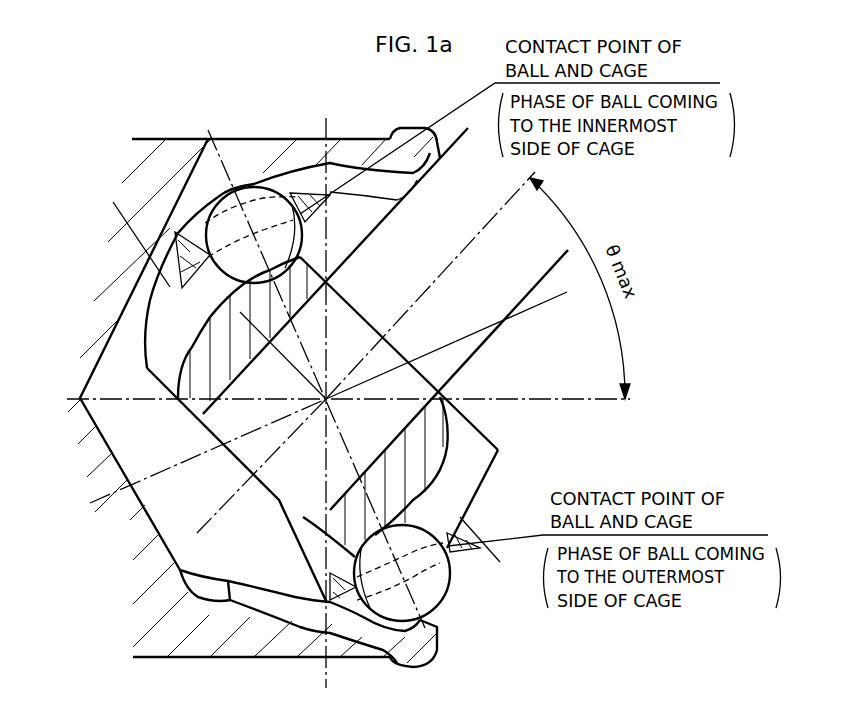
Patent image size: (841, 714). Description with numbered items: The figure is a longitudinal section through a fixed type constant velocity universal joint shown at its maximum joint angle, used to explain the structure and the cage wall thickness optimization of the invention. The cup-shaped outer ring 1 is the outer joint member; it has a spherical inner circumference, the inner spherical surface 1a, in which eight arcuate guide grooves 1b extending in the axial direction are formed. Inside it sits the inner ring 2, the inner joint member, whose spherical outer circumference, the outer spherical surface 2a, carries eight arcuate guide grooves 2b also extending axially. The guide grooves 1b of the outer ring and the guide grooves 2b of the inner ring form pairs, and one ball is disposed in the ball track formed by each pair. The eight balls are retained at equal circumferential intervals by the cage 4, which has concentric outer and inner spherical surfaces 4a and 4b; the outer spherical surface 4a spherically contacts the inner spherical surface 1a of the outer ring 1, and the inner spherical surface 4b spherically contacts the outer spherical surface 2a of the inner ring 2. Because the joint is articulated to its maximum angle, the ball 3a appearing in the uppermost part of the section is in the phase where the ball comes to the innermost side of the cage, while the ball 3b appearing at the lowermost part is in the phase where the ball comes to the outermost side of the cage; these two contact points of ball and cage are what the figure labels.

The outer ring 1 is at (180, 139).
The inner spherical surface 1a is at (249, 582).
The guide grooves 1b is at (278, 615).
The inner ring 2 is at (153, 347).
The outer spherical surface 2a is at (490, 473).
The guide grooves 2b is at (452, 443).
The ball 3a is at (268, 178).
The ball 3b is at (450, 588).
The cage 4 is at (167, 272).
The outer spherical surface 4a is at (363, 633).
The inner spherical surface 4b is at (343, 647).